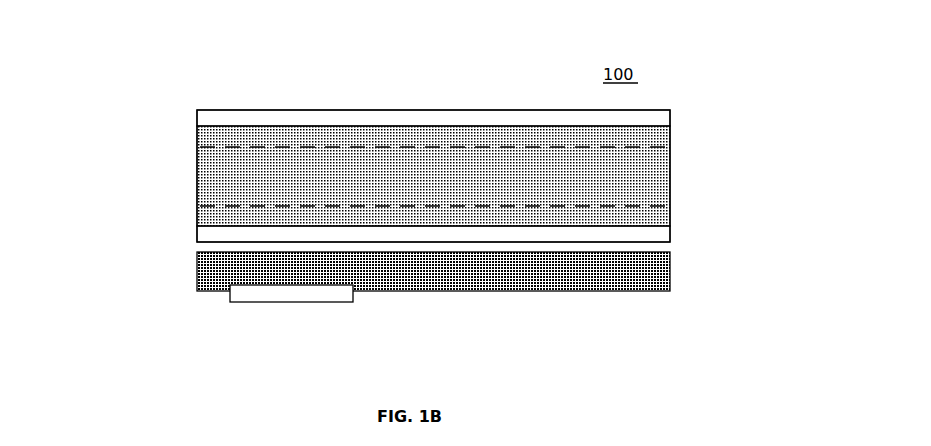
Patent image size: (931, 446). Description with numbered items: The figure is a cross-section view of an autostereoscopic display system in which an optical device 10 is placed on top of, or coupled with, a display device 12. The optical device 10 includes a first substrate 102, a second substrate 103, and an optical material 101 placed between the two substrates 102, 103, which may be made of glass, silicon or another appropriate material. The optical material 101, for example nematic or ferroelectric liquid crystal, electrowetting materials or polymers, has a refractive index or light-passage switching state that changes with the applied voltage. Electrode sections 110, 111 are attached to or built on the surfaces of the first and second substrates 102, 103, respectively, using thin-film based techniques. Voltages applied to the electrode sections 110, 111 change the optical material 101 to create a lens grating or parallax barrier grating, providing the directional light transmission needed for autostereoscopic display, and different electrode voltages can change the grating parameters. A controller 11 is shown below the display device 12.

The optical device 10 is at (196, 115).
The first substrate 102 is at (195, 112).
The second substrate 103 is at (195, 238).
The optical material 101 is at (653, 175).
The electrode section 110 is at (635, 135).
The electrode section 111 is at (635, 215).
The display device 12 is at (653, 272).
The controller 11 is at (253, 294).